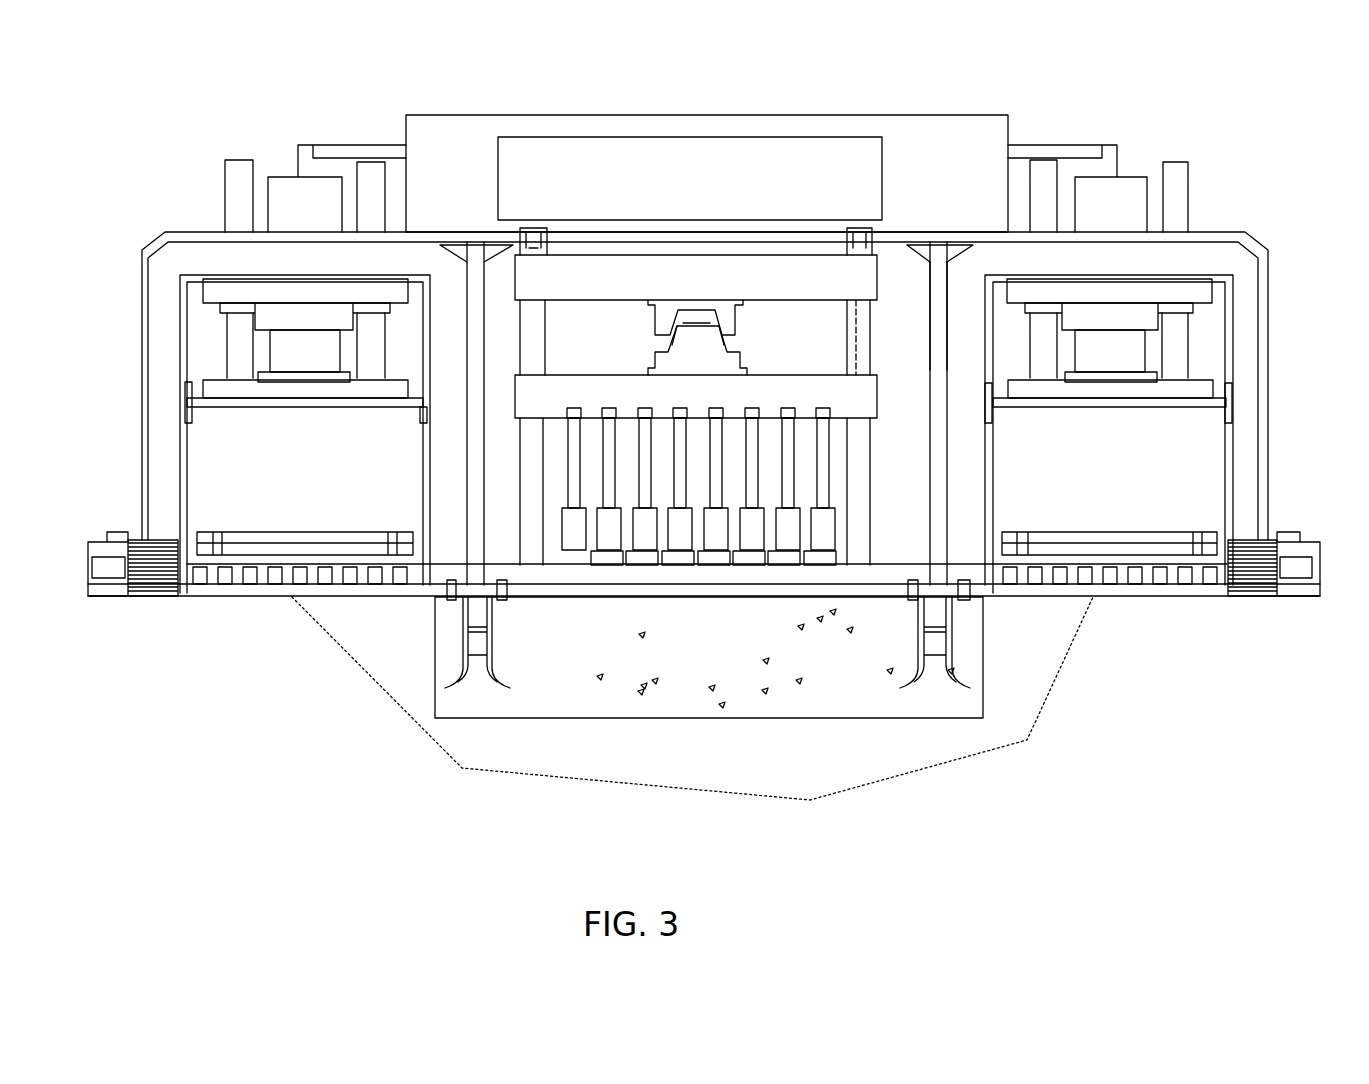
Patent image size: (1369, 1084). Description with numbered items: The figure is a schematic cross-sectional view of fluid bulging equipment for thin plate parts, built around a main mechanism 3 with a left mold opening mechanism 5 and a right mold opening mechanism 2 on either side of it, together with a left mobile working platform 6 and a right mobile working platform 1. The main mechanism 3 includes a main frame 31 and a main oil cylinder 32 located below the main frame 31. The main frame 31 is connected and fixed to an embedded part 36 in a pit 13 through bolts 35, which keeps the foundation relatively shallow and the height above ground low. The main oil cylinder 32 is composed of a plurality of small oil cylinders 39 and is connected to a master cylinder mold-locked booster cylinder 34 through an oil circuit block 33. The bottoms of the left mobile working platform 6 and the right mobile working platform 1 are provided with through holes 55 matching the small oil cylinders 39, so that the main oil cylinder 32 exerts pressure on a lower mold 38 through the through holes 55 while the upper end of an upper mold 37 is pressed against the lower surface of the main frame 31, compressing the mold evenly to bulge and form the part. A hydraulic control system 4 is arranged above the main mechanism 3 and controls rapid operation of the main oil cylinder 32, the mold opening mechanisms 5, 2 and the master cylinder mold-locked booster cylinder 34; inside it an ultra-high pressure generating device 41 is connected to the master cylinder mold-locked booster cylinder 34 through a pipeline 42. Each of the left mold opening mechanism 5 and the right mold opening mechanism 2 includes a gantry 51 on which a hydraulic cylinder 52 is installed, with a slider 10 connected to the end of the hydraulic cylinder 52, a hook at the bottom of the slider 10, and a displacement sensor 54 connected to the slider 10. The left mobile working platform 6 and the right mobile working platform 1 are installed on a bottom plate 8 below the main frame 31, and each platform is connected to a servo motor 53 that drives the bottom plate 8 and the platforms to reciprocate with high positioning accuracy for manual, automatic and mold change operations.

The right mobile working platform 1 is at (1180, 505).
The right mold opening mechanism 2 is at (1190, 347).
The main mechanism 3 is at (852, 333).
The hydraulic control system 4 is at (958, 128).
The left mold opening mechanism 5 is at (237, 372).
The left mobile working platform 6 is at (267, 512).
The bottom plate 8 is at (275, 583).
The slider 10 is at (223, 405).
The pit 13 is at (862, 688).
The main frame 31 is at (938, 523).
The main oil cylinder 32 is at (557, 527).
The oil circuit block 33 is at (903, 368).
The master cylinder mold-locked booster cylinder 34 is at (532, 403).
The bolt 35 is at (962, 592).
The embedded part 36 is at (955, 650).
The upper mold 37 is at (723, 303).
The lower mold 38 is at (722, 367).
The small oil cylinder 39 is at (572, 538).
The ultra-high pressure generating device 41 is at (512, 178).
The pipeline 42 is at (533, 238).
The gantry 51 is at (220, 292).
The hydraulic cylinder 52 is at (1127, 377).
The servo motor 53 is at (110, 572).
The displacement sensor 54 is at (190, 403).
The through hole 55 is at (268, 568).